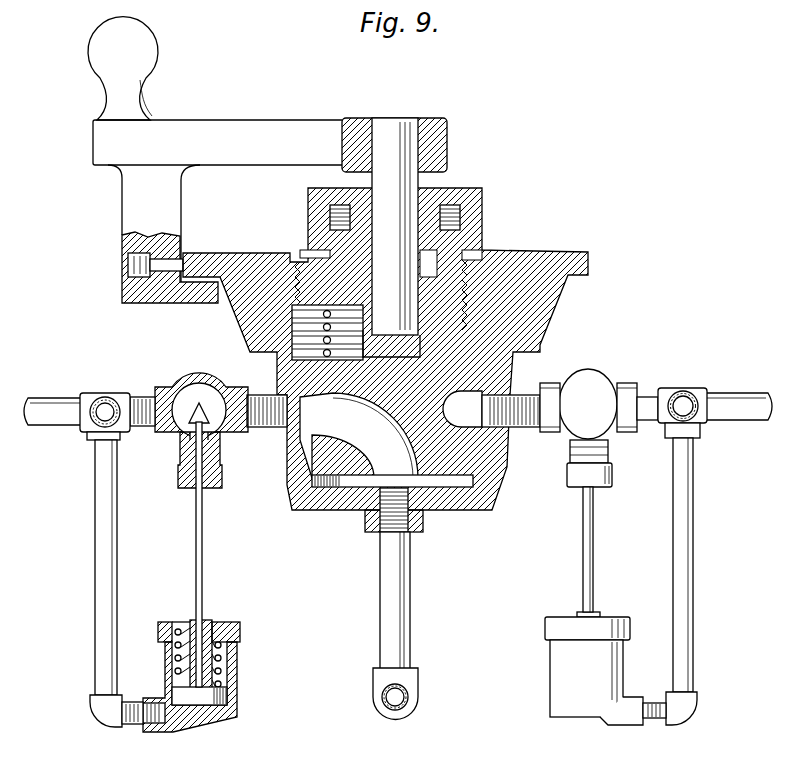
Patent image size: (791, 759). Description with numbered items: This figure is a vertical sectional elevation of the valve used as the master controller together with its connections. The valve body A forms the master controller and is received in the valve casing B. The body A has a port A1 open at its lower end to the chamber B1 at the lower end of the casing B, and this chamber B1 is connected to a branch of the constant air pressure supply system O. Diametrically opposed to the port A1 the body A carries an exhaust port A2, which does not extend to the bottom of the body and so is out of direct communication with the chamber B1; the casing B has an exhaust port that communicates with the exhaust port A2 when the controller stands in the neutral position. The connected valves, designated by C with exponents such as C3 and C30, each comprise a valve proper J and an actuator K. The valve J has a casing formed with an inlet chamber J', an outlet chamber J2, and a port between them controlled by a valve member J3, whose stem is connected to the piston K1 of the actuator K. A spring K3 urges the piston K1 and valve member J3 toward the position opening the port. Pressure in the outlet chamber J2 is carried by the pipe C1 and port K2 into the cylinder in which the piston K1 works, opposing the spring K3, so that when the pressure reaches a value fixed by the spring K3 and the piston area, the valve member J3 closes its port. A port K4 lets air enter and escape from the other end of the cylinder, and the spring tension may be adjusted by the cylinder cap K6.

The valve body A is at (540, 340).
The port A1 is at (359, 435).
The exhaust port A2 is at (475, 402).
The valve casing B is at (505, 468).
The chamber B1 is at (447, 512).
The constant air pressure supply system O is at (412, 630).
The valve proper J is at (400, 417).
The outlet chamber J2 is at (205, 380).
The valve member J3 is at (175, 442).
The inlet chamber J' is at (225, 441).
The pipe nipple C30 is at (157, 388).
The joint neck C3 is at (610, 463).
The pipe C1 is at (97, 574).
The actuator K is at (560, 686).
The piston K1 is at (237, 695).
The port K2 is at (168, 717).
The spring K3 is at (170, 675).
The port K4 is at (178, 625).
The cylinder cap K6 is at (222, 624).